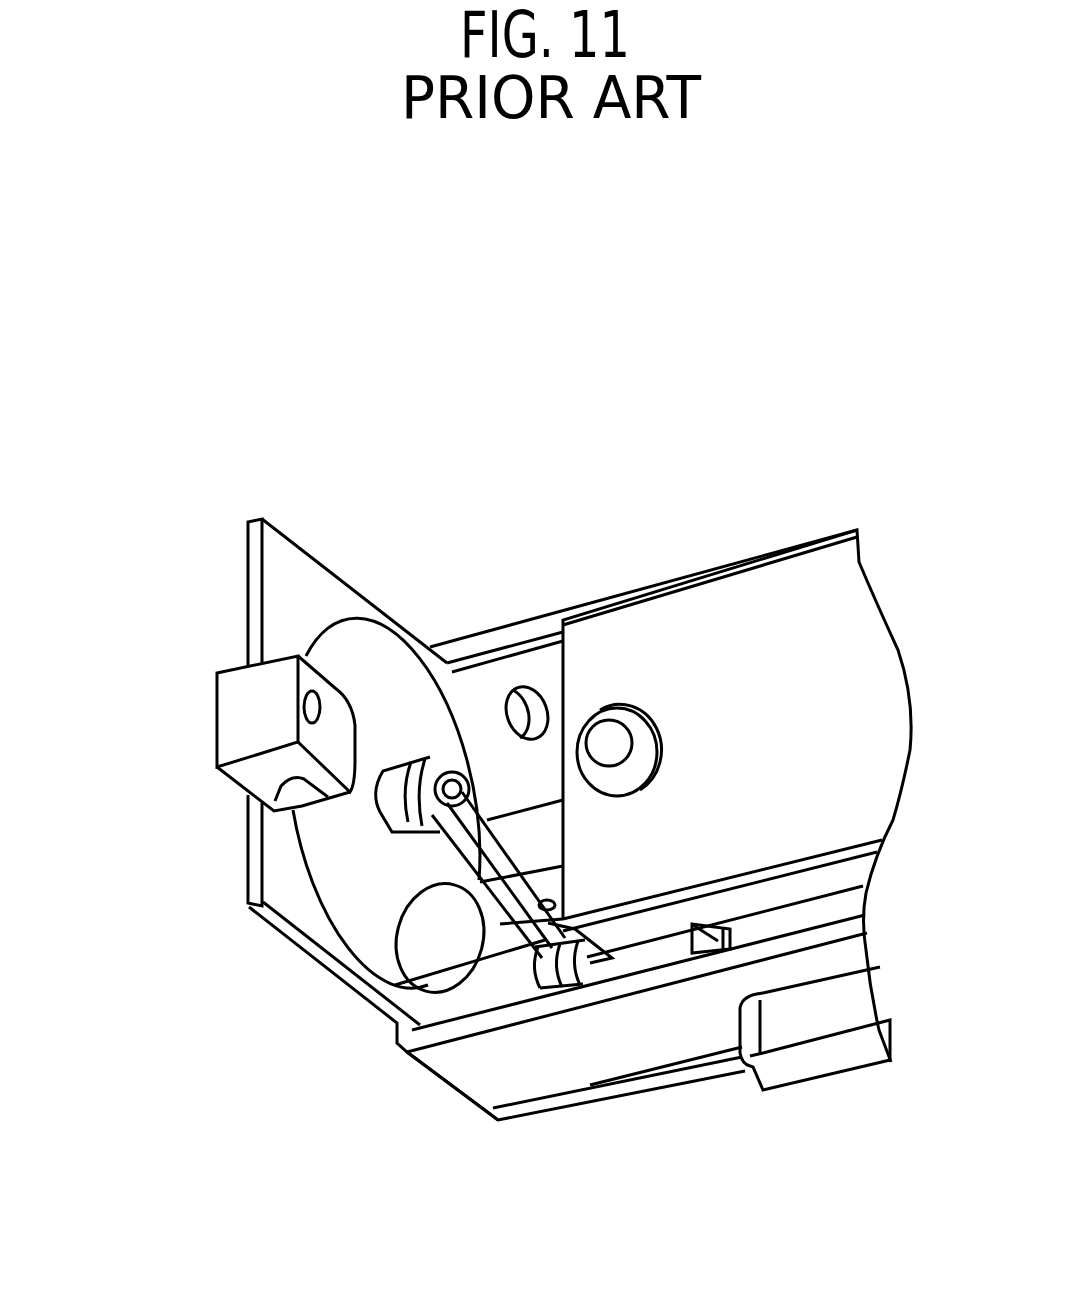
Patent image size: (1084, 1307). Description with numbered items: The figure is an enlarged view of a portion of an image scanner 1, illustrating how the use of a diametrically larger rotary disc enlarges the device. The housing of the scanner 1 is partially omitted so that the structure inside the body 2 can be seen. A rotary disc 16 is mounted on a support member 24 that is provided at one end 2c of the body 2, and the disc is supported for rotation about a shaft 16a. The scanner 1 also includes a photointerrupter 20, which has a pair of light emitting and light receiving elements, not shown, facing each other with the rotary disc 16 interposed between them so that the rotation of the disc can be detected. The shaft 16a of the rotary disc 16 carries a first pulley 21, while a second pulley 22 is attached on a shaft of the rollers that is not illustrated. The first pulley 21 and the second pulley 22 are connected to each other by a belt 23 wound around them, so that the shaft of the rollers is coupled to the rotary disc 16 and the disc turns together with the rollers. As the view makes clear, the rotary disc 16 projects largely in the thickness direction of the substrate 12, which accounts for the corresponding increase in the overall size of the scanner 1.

The scanner 1 is at (803, 1107).
The body 2 is at (660, 1088).
The one end of the body 2c is at (457, 1100).
The substrate 12 is at (740, 612).
The rotary disc 16 is at (362, 923).
The shaft 16a is at (458, 784).
The photointerrupter 20 is at (213, 720).
The first pulley 21 is at (447, 780).
The second pulley 22 is at (563, 988).
The belt 23 is at (460, 883).
The support member 24 is at (243, 870).